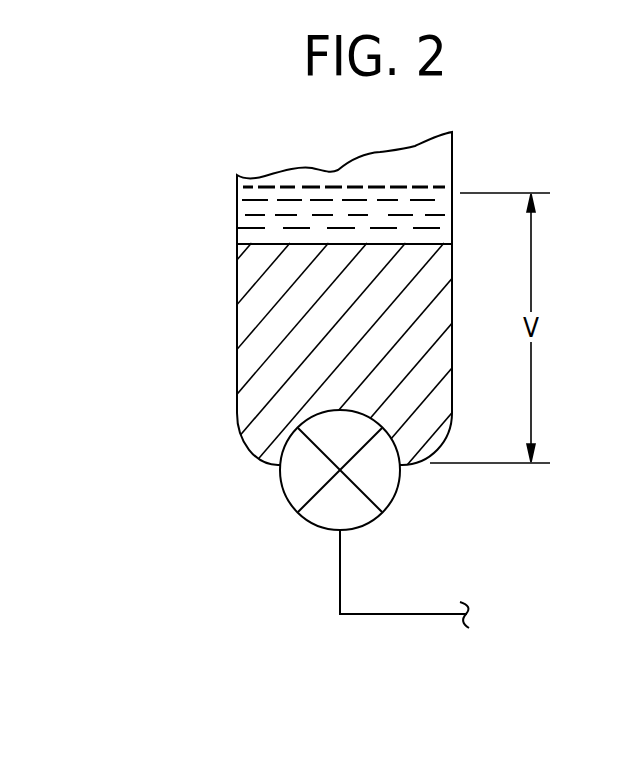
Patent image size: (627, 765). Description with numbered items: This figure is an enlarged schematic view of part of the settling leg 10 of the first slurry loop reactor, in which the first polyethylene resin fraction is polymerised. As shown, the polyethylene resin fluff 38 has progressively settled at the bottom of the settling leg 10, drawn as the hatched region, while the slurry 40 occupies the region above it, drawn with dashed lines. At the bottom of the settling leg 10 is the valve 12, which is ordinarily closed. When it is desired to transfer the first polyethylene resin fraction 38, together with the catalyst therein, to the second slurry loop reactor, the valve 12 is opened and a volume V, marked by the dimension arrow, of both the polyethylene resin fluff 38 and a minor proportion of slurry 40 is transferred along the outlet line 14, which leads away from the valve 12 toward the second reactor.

The settling leg 10 is at (238, 380).
The polyethylene resin fluff 38 is at (298, 343).
The slurry 40 is at (237, 222).
The valve 12 is at (322, 517).
The outlet line 14 is at (403, 614).